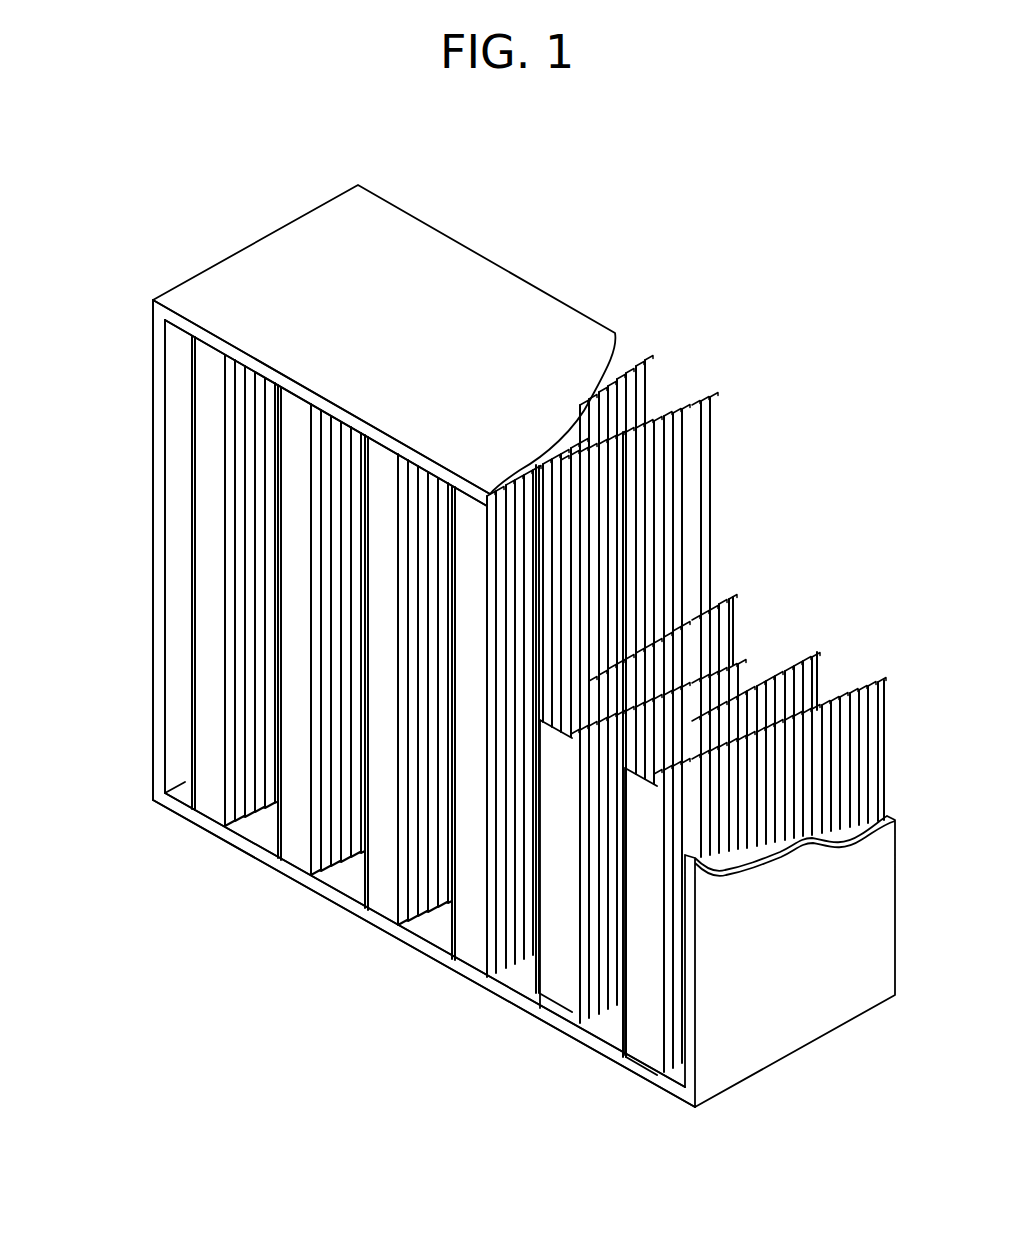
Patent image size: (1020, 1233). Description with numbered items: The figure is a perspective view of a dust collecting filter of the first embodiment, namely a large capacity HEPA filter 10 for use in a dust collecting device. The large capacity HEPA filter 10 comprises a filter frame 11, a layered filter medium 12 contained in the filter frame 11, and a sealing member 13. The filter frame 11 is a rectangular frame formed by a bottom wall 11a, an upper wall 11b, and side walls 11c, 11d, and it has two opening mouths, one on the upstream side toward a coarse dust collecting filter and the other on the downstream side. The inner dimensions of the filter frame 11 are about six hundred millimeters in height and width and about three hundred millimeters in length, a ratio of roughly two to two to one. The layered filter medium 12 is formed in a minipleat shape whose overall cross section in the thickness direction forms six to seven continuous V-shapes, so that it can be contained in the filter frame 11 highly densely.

The large capacity HEPA filter 10 is at (776, 343).
The filter frame 11 is at (157, 376).
The bottom wall 11a is at (507, 995).
The upper wall 11b is at (482, 268).
The side wall 11c is at (155, 512).
The side wall 11d is at (795, 1032).
The layered filter medium 12 is at (707, 467).
The sealing member 13 is at (345, 878).